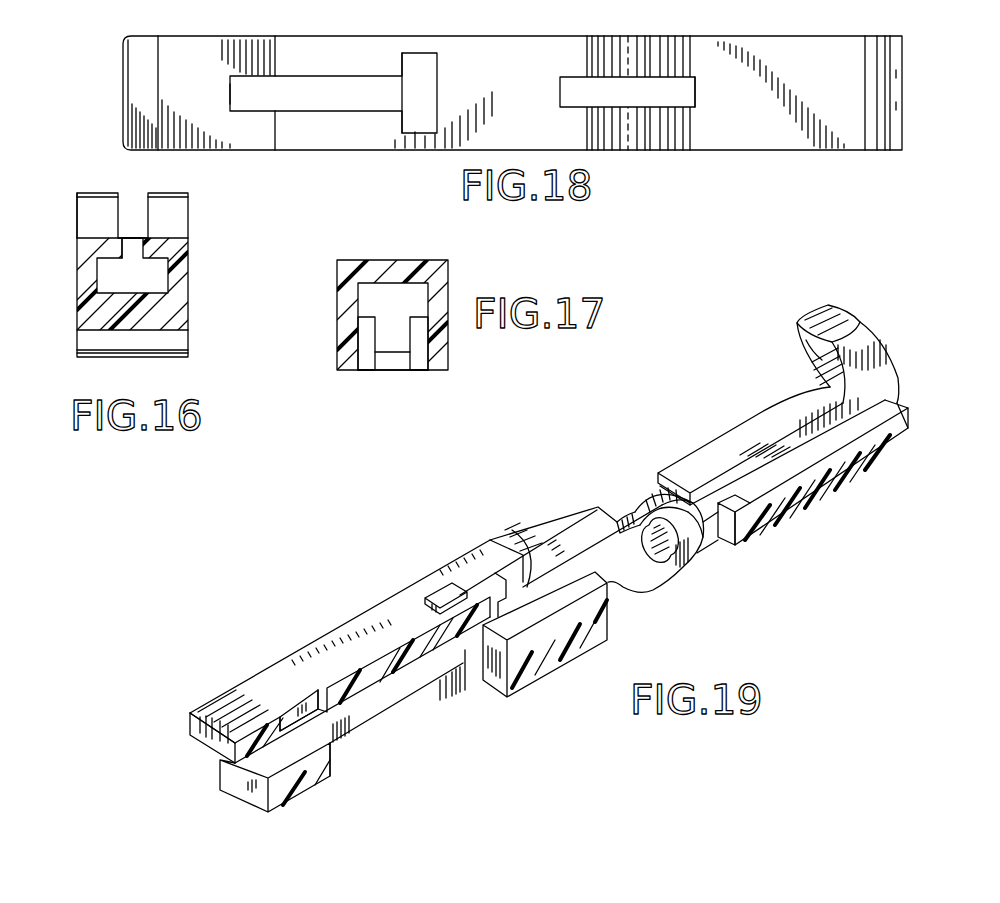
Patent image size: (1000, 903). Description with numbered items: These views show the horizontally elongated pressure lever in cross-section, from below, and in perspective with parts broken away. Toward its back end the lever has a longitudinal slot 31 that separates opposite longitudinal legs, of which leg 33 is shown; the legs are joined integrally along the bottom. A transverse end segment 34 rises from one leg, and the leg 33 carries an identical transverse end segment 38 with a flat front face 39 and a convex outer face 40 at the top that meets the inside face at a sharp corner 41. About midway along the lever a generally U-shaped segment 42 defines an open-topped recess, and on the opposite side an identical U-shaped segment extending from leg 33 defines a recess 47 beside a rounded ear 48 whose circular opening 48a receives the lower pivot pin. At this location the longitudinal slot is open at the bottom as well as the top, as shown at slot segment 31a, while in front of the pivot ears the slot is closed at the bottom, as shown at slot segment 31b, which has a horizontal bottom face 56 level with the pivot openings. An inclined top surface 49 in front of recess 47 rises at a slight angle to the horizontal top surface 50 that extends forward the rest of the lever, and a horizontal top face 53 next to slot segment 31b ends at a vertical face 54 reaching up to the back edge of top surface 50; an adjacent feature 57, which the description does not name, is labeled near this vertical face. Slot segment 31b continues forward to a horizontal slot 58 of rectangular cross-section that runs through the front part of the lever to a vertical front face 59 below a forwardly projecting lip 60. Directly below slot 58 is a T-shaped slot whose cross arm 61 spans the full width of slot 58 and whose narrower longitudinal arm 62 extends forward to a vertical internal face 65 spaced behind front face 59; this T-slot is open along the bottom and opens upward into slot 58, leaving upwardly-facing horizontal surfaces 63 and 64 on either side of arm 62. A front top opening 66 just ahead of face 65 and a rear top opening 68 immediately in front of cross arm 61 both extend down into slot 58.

In FIG. 19, the longitudinal slot 31 is at (822, 478).
In FIG. 18, the slot segment 31a is at (695, 96).
In FIG. 19, the slot segment 31a is at (727, 530).
In FIG. 19, the slot segment 31b is at (612, 580).
In FIG. 19, the longitudinal leg 33 is at (740, 430).
In FIG. 16, the transverse end segment 34 is at (180, 212).
In FIG. 16, the transverse end segment 38 is at (86, 212).
In FIG. 19, the transverse end segment 38 is at (885, 352).
In FIG. 19, the flat front face 39 is at (812, 350).
In FIG. 19, the convex outer face 40 is at (850, 312).
In FIG. 19, the sharp corner 41 is at (805, 330).
In FIG. 18, the U-shaped segment 42 is at (630, 50).
In FIG. 19, the recess 47 is at (620, 516).
In FIG. 19, the rounded ear 48 is at (645, 492).
In FIG. 19, the circular opening 48a is at (690, 518).
In FIG. 19, the inclined top surface 49 is at (535, 540).
In FIG. 17, the horizontal top surface 50 is at (352, 262).
In FIG. 19, the horizontal top surface 50 is at (375, 622).
In FIG. 19, the horizontal top face 53 is at (578, 545).
In FIG. 19, the vertical face 54 is at (535, 537).
In FIG. 19, the horizontal bottom face 56 is at (580, 568).
In FIG. 19, the step 57 is at (503, 598).
In FIG. 16, the horizontal slot 58 is at (170, 282).
In FIG. 17, the horizontal slot 58 is at (392, 290).
In FIG. 19, the horizontal slot 58 is at (405, 702).
In FIG. 18, the vertical front face 59 is at (158, 82).
In FIG. 19, the vertical front face 59 is at (240, 795).
In FIG. 18, the lip 60 is at (123, 82).
In FIG. 19, the lip 60 is at (188, 740).
In FIG. 18, the cross arm 61 is at (422, 70).
In FIG. 17, the cross arm 61 is at (428, 340).
In FIG. 19, the cross arm 61 is at (468, 680).
In FIG. 18, the longitudinal arm 62 is at (312, 90).
In FIG. 17, the longitudinal arm 62 is at (392, 328).
In FIG. 19, the longitudinal arm 62 is at (420, 700).
In FIG. 17, the upwardly-facing horizontal surface 63 is at (368, 318).
In FIG. 17, the upwardly-facing horizontal surface 64 is at (416, 318).
In FIG. 18, the vertical internal face 65 is at (234, 94).
In FIG. 19, the vertical internal face 65 is at (332, 772).
In FIG. 16, the front top opening 66 is at (128, 238).
In FIG. 19, the front top opening 66 is at (298, 706).
In FIG. 19, the rear top opening 68 is at (442, 594).